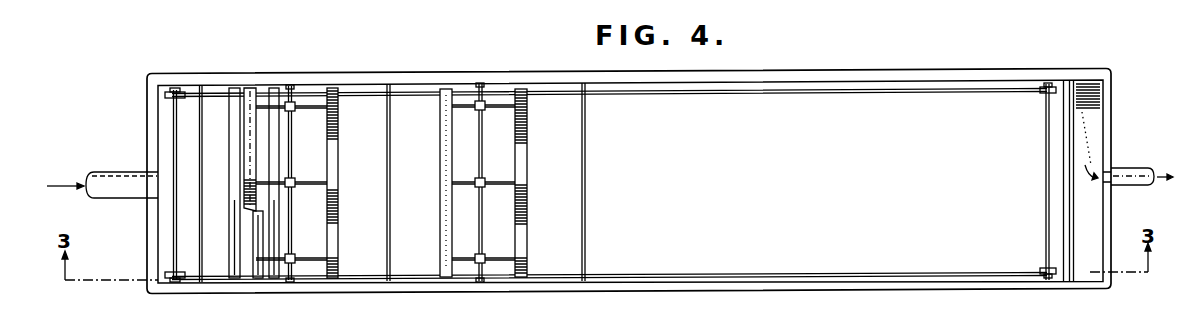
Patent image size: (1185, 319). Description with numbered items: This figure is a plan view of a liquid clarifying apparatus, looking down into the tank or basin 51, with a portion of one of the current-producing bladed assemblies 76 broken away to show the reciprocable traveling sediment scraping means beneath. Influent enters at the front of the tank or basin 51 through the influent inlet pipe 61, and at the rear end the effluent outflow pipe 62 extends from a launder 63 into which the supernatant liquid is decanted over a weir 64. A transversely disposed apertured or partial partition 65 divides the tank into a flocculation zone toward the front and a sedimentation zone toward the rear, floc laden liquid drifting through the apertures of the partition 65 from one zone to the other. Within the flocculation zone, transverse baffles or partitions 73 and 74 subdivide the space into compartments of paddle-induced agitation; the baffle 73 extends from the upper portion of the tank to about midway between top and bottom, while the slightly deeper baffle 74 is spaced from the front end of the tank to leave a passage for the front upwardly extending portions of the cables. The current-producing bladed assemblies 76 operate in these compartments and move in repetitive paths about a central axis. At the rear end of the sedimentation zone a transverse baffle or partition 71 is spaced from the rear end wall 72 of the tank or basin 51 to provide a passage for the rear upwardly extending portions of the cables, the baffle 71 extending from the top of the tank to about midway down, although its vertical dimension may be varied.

The tank or basin 51 is at (157, 243).
The influent inlet pipe 61 is at (112, 180).
The effluent outflow pipe 62 is at (1127, 179).
The launder 63 is at (1090, 214).
The weir 64 is at (1067, 175).
The apertured partial partition 65 is at (584, 154).
The transverse baffle or partition 71 is at (1044, 139).
The rear end wall 72 is at (1112, 165).
The baffle or partition 73 is at (388, 226).
The baffle or partition 74 is at (202, 176).
The current-producing bladed assemblies 76 is at (291, 184).